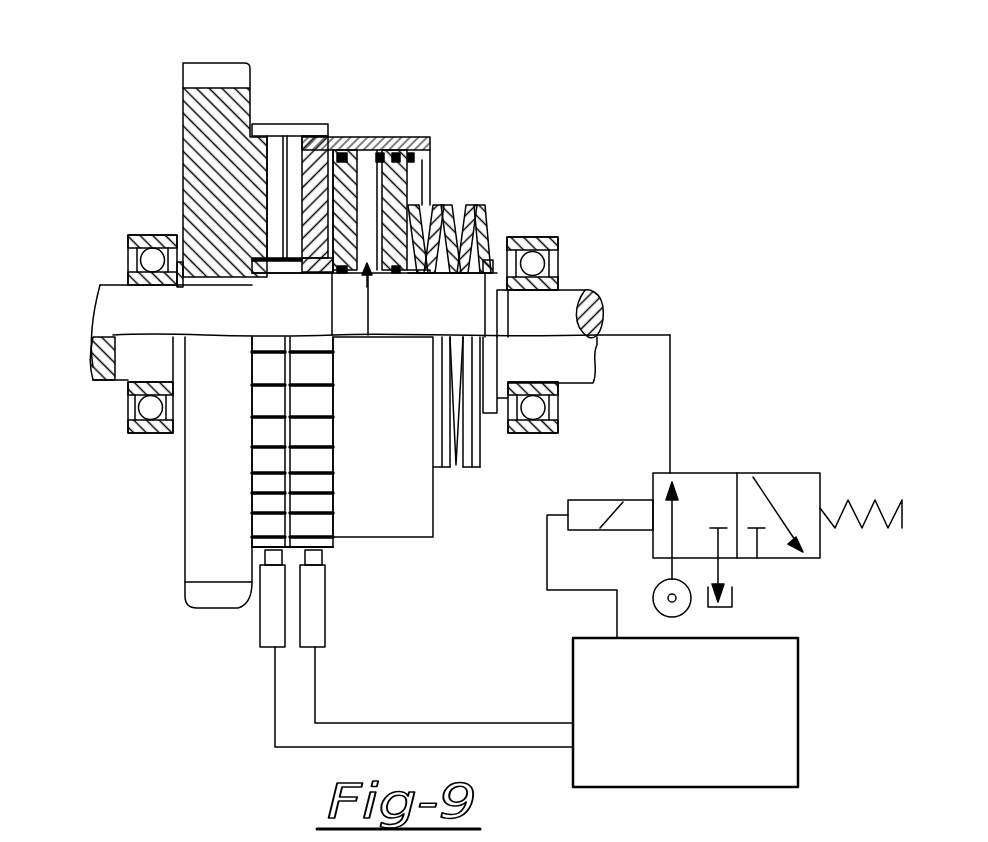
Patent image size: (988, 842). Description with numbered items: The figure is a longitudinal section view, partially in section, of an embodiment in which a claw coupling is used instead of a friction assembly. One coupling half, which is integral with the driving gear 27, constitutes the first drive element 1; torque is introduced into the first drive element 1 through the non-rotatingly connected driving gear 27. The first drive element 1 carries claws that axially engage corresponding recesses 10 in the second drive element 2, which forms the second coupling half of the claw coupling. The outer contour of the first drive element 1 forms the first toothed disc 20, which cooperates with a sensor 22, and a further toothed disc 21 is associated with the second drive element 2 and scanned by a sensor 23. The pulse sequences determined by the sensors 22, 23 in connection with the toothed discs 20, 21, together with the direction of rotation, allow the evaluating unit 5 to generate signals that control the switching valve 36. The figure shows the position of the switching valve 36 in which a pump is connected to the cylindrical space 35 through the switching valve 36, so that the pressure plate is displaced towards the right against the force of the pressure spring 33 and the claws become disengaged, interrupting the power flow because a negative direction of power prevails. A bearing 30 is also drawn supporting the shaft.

The first drive element 1 is at (270, 163).
The second drive element 2 is at (347, 142).
The evaluating unit 5 is at (693, 722).
The recesses 10 is at (268, 80).
The first toothed disc 20 is at (273, 397).
The toothed disc 21 is at (322, 503).
The sensor 22 is at (275, 618).
The sensor 23 is at (315, 608).
The driving gear 27 is at (198, 80).
The bearing 30 is at (127, 328).
The pressure spring 33 is at (472, 233).
The cylindrical space 35 is at (365, 193).
The switching valve 36 is at (788, 495).